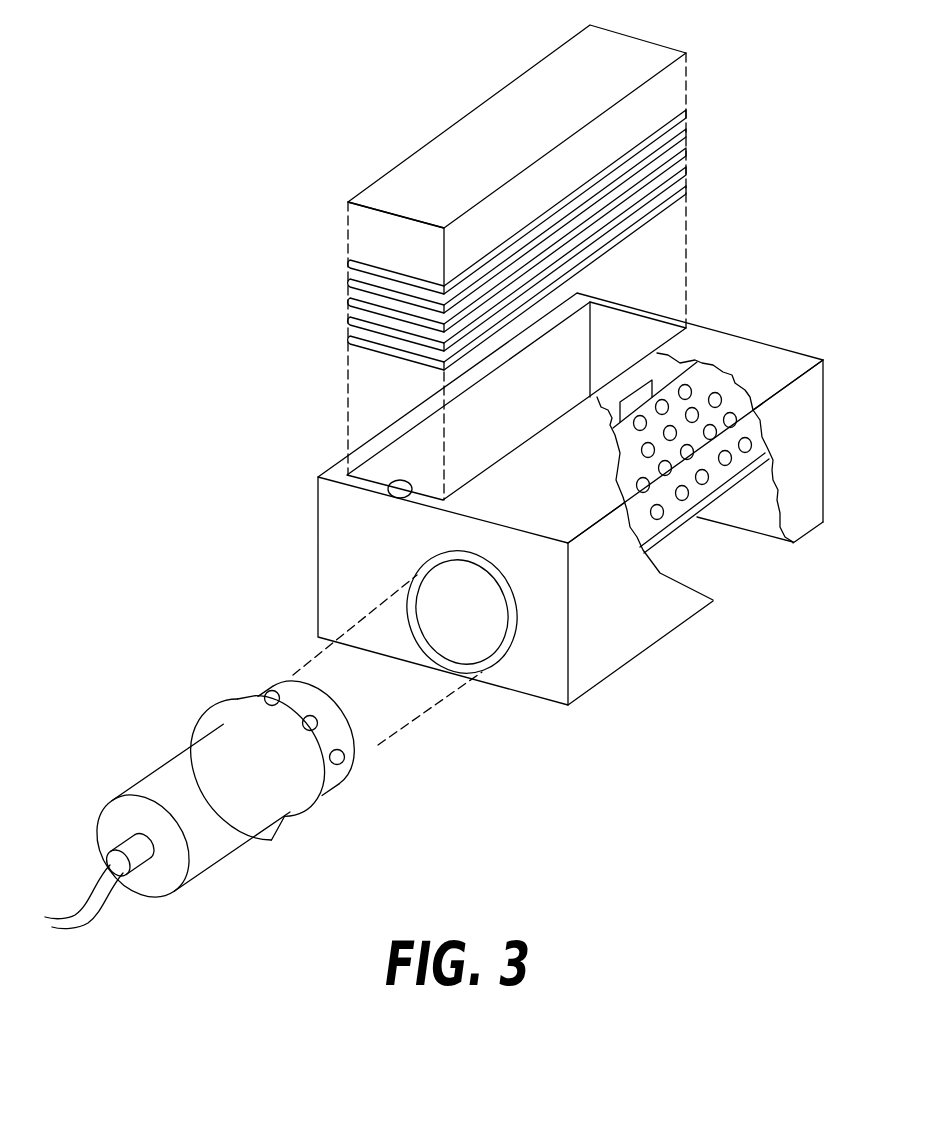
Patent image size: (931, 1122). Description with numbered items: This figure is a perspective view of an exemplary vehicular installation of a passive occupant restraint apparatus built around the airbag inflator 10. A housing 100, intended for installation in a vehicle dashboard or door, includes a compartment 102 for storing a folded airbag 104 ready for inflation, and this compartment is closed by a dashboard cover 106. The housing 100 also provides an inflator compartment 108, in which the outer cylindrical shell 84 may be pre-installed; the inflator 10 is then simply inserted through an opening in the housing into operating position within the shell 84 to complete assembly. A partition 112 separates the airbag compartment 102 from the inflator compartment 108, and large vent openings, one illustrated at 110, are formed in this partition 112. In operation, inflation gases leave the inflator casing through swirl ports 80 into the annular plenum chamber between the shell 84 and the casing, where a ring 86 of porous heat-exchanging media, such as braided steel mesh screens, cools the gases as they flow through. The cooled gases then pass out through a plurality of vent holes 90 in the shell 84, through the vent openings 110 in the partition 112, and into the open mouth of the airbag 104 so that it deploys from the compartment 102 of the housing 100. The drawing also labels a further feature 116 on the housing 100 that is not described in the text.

The inflator 10 is at (167, 778).
The swirl ports 80 is at (350, 766).
The outer cylindrical shell 84 is at (660, 537).
The ring of porous media 86 is at (320, 819).
The vent holes 90 is at (703, 479).
The housing 100 is at (317, 532).
The compartment 102 is at (410, 499).
The folded airbag 104 is at (687, 170).
The dashboard cover 106 is at (452, 152).
The inflator compartment 108 is at (767, 497).
The vent opening 110 is at (655, 389).
The partition 112 is at (633, 377).
The probe port 116 is at (497, 650).